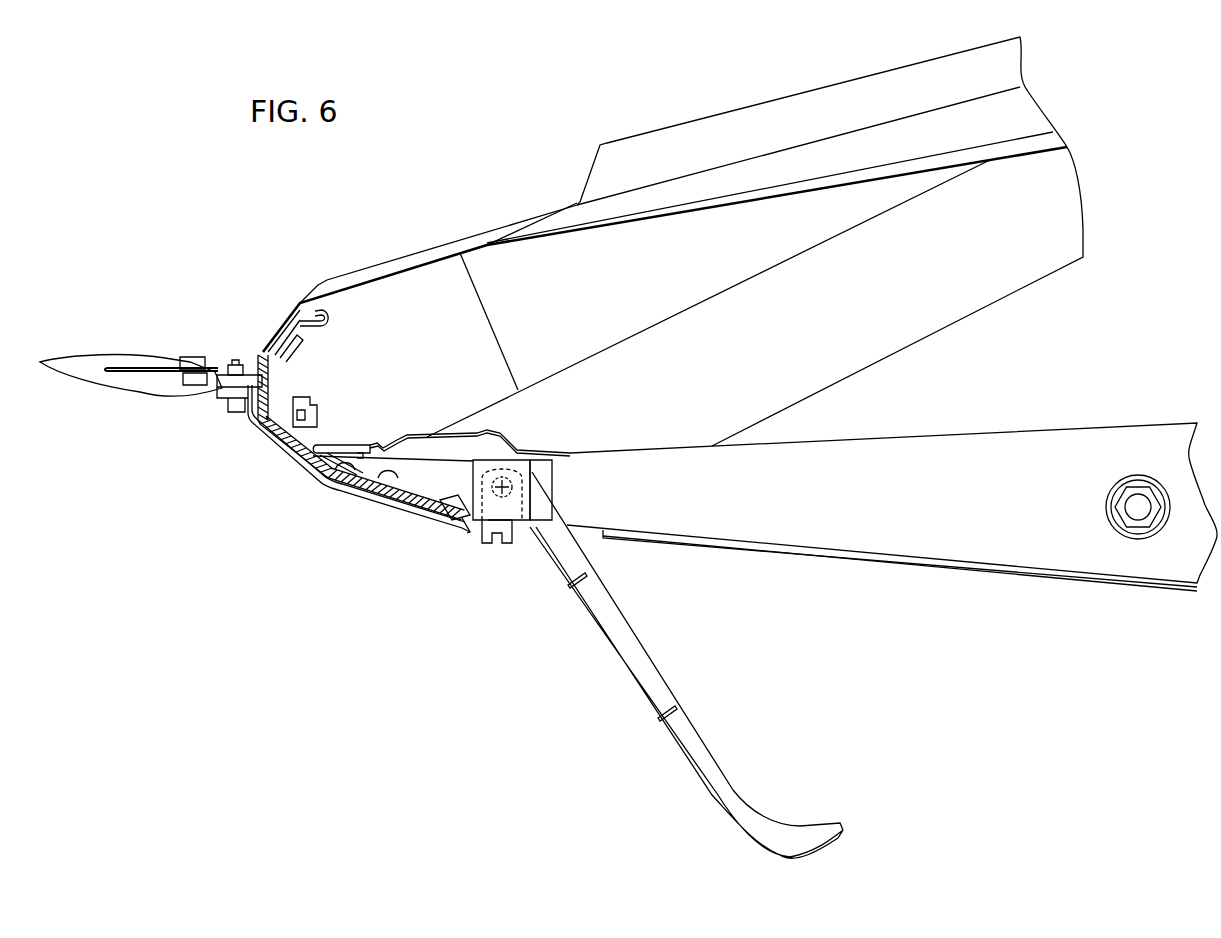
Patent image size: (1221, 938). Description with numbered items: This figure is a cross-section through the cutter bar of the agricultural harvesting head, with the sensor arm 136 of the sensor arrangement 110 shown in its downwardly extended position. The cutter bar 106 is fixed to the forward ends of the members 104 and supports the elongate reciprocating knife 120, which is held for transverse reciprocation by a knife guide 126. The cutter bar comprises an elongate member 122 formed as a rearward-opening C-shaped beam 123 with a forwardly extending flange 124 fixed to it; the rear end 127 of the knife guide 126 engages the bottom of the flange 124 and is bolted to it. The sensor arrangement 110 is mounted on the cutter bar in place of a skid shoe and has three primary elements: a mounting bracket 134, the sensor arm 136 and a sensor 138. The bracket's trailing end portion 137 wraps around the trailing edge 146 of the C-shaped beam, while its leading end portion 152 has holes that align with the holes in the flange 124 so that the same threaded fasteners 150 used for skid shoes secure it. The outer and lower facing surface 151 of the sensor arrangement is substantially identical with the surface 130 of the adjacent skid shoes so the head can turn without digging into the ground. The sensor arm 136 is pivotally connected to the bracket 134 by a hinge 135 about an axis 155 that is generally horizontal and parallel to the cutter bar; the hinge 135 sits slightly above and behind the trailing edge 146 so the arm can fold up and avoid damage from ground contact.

The member 104 is at (820, 516).
The cutter bar 106 is at (275, 386).
The sensor arrangement 110 is at (480, 647).
The reciprocating knife 120 is at (182, 352).
The elongate member 122 is at (320, 480).
The C-shaped beam 123 is at (360, 500).
The flange 124 is at (240, 360).
The knife guide 126 is at (127, 393).
The rear end 127 is at (260, 363).
The surface 130 is at (413, 523).
The mounting bracket 134 is at (390, 480).
The hinge 135 is at (487, 533).
The sensor arm 136 is at (647, 647).
The trailing end portion 137 is at (480, 530).
The sensor 138 is at (493, 515).
The trailing edge 146 is at (467, 522).
The fastener 150 is at (195, 347).
The outer and lower facing surface 151 is at (343, 500).
The leading end portion 152 is at (223, 410).
The axis 155 is at (502, 478).